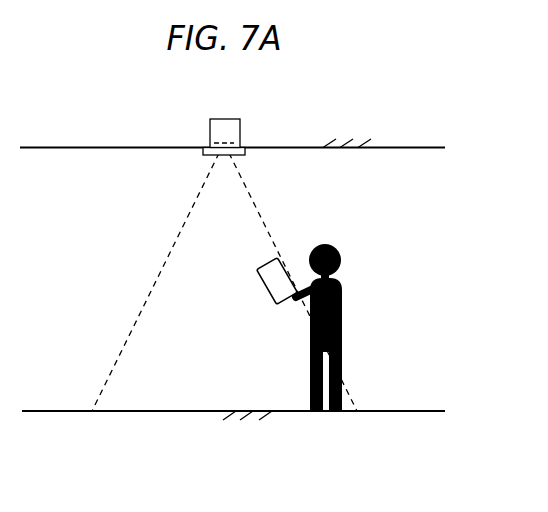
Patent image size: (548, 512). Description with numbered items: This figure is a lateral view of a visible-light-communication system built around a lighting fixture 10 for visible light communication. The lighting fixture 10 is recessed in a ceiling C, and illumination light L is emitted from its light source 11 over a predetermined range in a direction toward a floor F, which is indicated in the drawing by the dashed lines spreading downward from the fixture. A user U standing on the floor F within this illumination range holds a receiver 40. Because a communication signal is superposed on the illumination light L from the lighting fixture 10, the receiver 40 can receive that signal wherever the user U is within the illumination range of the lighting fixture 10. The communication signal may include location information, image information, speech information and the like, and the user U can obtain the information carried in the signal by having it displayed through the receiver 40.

The lighting fixture 10 is at (231, 120).
The light source 11 is at (232, 134).
The receiver 40 is at (262, 283).
The illumination light L is at (155, 280).
The user U is at (343, 293).
The ceiling C is at (387, 148).
The floor F is at (382, 411).